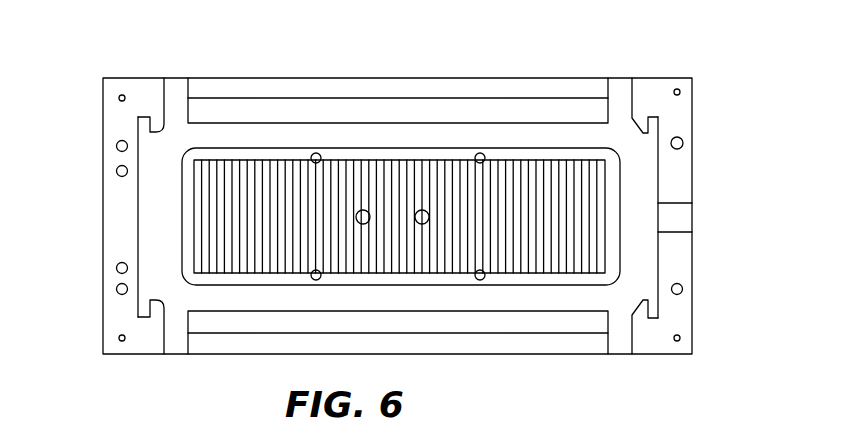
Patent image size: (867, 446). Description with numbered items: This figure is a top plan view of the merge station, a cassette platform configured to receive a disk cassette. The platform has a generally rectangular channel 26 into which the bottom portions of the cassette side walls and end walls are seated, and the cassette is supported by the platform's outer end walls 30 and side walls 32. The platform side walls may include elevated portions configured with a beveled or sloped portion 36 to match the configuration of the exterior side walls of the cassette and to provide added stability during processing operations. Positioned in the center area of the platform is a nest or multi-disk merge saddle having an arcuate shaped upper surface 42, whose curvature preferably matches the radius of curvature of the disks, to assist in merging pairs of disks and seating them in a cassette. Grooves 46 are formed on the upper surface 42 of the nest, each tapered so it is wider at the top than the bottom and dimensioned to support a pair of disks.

The rectangular channel 26 is at (153, 239).
The outer end walls 30 is at (121, 210).
The side walls 32 is at (260, 108).
The beveled or sloped portion 36 is at (530, 110).
The arcuate shaped upper surface 42 is at (557, 157).
The grooves 46 is at (343, 175).